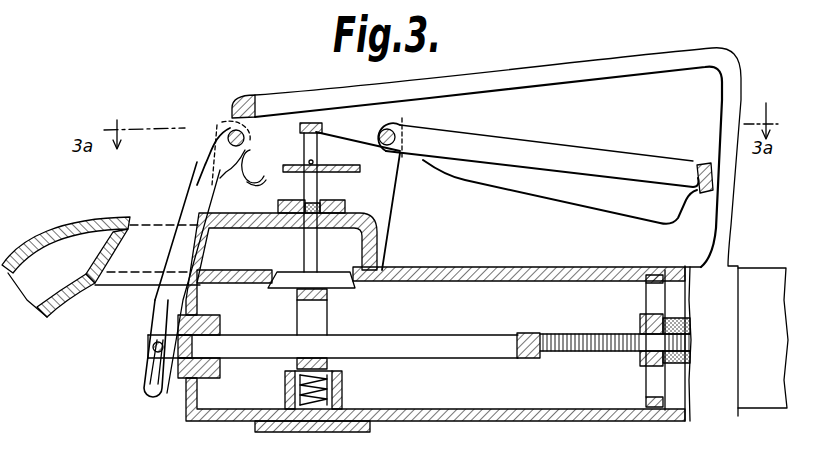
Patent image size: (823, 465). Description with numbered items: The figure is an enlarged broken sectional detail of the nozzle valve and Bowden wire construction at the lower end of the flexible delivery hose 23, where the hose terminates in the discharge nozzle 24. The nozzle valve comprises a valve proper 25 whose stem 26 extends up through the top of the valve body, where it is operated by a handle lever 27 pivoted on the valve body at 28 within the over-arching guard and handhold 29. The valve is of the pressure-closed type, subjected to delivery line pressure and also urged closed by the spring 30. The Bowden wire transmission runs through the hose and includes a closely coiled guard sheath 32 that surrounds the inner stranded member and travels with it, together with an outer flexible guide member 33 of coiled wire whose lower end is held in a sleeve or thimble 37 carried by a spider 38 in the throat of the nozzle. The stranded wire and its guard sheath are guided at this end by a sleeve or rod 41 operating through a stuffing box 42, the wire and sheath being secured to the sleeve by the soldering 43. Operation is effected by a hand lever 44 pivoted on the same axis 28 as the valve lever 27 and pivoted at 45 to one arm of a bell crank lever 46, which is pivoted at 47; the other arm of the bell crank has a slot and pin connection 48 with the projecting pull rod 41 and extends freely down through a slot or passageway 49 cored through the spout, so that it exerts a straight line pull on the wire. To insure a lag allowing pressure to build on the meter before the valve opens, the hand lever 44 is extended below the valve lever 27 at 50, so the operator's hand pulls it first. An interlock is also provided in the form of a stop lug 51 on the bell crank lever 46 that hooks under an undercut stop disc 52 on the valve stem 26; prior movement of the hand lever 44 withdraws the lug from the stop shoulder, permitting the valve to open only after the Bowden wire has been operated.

The flexible delivery hose 23 is at (768, 402).
The discharge nozzle 24 is at (35, 297).
The valve proper 25 is at (327, 271).
The valve stem 26 is at (319, 187).
The handle lever 27 is at (578, 150).
The pivot 28 is at (399, 131).
The over-arching guard and handhold 29 is at (532, 70).
The spring 30 is at (330, 386).
The guard sheath 32 is at (608, 333).
The outer flexible guide member 33 is at (688, 352).
The sleeve or thimble 37 is at (648, 360).
The spider 38 is at (657, 296).
The sleeve or rod 41 is at (274, 342).
The stuffing box 42 is at (176, 375).
The soldering 43 is at (538, 332).
The hand lever 44 is at (707, 164).
The pivot 45 is at (309, 122).
The bell crank lever 46 is at (193, 163).
The pivot 47 is at (228, 131).
The slot and pin connection 48 is at (153, 357).
The slot or passageway 49 is at (142, 238).
The extension of hand lever 50 is at (543, 200).
The stop lug 51 is at (266, 181).
The undercut stop disc 52 is at (265, 175).